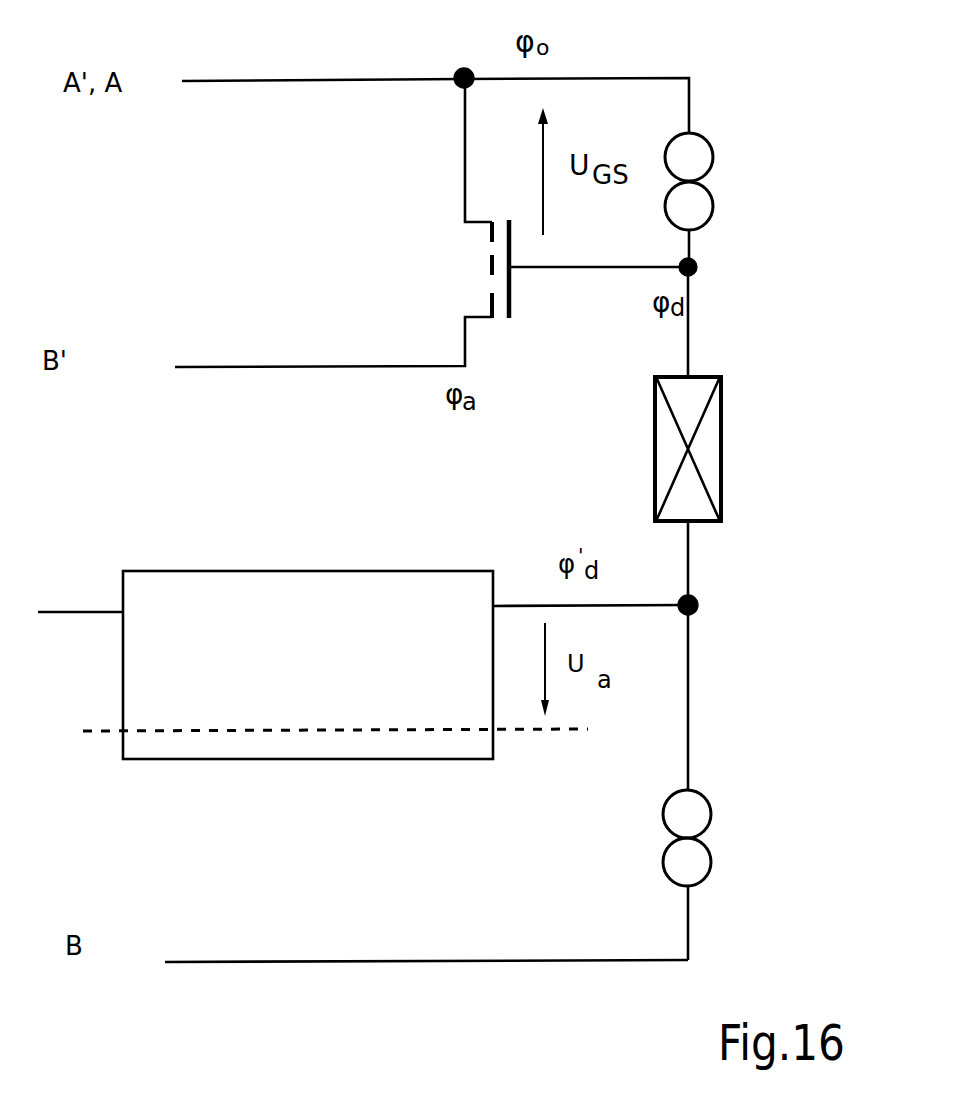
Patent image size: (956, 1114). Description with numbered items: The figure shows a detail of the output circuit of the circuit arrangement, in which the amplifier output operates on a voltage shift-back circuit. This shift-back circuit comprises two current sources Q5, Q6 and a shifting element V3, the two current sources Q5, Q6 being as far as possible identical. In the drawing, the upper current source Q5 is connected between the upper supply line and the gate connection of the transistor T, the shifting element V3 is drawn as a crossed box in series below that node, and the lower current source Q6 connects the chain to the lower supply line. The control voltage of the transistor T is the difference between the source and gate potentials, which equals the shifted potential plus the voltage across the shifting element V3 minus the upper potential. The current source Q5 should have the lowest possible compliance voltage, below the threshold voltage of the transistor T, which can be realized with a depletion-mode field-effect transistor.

The transistor T is at (431, 222).
The current source Q5 is at (733, 152).
The current source Q6 is at (732, 805).
The shifting element V3 is at (750, 502).